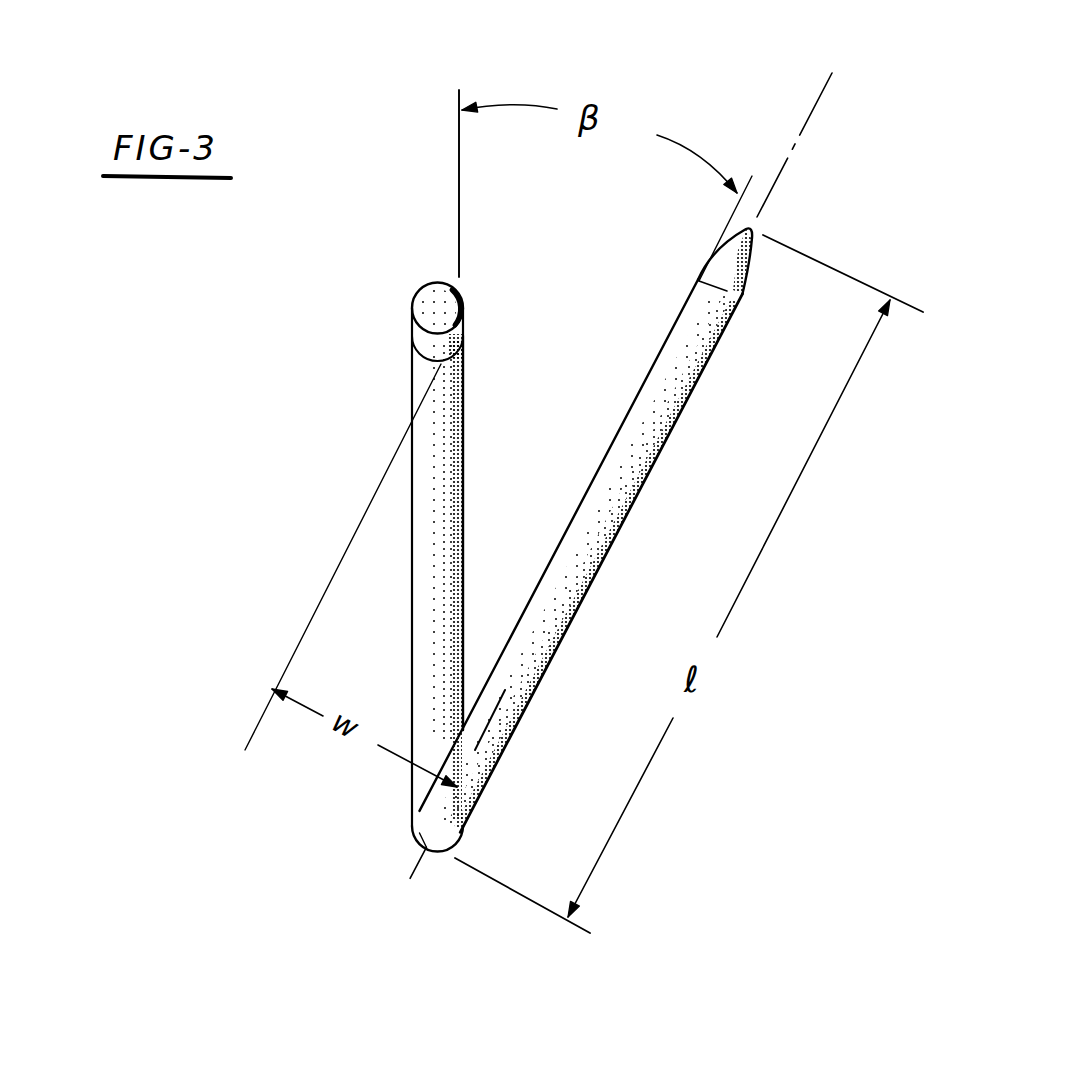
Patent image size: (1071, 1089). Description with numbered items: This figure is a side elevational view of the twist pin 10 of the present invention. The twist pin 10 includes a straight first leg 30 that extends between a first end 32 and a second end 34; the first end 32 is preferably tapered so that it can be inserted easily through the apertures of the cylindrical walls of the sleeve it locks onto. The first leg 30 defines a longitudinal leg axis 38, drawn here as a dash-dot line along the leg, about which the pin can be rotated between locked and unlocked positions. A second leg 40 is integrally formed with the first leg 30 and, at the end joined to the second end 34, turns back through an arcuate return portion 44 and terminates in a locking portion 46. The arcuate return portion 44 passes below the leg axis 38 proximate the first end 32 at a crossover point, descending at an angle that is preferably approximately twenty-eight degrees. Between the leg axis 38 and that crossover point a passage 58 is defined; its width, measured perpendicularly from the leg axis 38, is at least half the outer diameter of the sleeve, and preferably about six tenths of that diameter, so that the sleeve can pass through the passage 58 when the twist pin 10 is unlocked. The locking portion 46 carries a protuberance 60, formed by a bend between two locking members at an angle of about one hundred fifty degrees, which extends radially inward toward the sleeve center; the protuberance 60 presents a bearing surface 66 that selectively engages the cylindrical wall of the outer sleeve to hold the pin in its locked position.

The twist pin 10 is at (728, 377).
The first leg 30 is at (624, 519).
The first end of first leg 32 is at (754, 230).
The second end of first leg 34 is at (437, 850).
The longitudinal leg axis 38 is at (413, 863).
The second leg 40 is at (441, 366).
The arcuate return portion 44 is at (462, 557).
The locking portion 46 is at (410, 307).
The passage 58 is at (564, 316).
The protuberance 60 is at (463, 316).
The bearing surface 66 is at (427, 362).